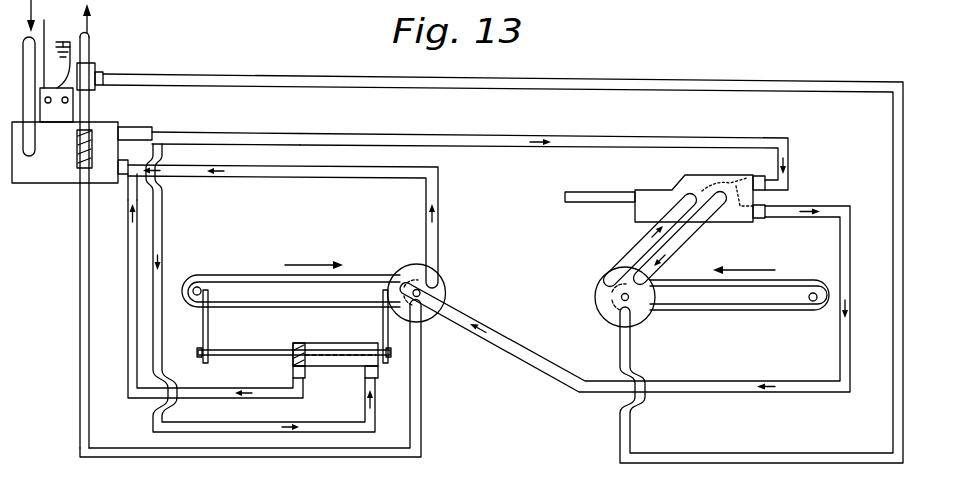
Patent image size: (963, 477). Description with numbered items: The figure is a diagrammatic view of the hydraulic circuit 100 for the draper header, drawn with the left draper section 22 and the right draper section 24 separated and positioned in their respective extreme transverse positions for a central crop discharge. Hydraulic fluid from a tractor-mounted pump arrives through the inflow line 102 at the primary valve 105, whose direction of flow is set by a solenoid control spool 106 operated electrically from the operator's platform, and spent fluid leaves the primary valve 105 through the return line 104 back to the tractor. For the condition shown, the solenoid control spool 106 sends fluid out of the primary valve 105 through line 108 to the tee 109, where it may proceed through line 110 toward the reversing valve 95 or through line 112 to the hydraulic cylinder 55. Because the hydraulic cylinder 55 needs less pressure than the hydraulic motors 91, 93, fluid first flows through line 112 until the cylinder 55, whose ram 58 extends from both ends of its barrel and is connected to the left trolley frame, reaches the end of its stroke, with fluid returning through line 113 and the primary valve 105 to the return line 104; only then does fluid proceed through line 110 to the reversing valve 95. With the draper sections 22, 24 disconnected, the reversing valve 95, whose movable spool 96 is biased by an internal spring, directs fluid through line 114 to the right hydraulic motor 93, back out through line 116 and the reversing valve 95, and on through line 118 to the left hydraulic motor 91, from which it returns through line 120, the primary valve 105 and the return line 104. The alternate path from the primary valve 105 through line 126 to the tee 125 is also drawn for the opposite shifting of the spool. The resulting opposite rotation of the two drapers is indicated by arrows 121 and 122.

The hydraulic circuit 100 is at (280, 60).
The inflow line 102 is at (49, 8).
The return line 104 is at (90, 42).
The primary valve 105 is at (55, 172).
The solenoid control spool 106 is at (74, 68).
The line 108 is at (135, 127).
The tee 109 is at (165, 133).
The line 110 is at (395, 134).
The line 112 is at (163, 206).
The line 113 is at (128, 285).
The line 114 is at (690, 238).
The line 116 is at (633, 251).
The line 118 is at (680, 394).
The line 120 is at (440, 185).
The arrow 121 is at (308, 262).
The arrow 122 is at (755, 268).
The tee 125 is at (128, 182).
The line 126 is at (122, 176).
The left draper section 22 is at (257, 276).
The right draper section 24 is at (715, 312).
The hydraulic cylinder 55 is at (343, 320).
The ram 58 is at (228, 350).
The left hydraulic motor 91 is at (445, 287).
The right hydraulic motor 93 is at (597, 306).
The reversing valve 95 is at (682, 188).
The spool 96 is at (578, 191).